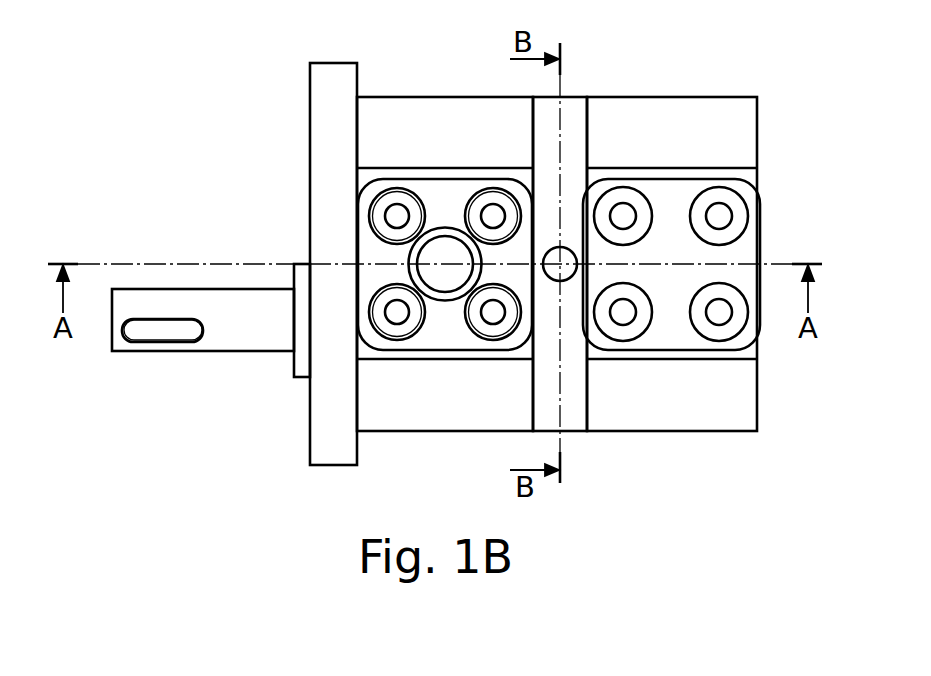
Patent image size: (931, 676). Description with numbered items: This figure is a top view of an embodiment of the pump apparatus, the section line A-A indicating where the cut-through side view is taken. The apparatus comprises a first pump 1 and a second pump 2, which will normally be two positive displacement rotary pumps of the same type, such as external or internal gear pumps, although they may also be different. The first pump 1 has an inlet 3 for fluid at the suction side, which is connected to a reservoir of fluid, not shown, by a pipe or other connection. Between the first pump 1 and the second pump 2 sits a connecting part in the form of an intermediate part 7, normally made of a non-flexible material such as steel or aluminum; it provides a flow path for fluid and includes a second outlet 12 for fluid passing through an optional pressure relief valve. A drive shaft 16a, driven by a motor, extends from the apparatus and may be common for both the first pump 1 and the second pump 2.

The first pump 1 is at (442, 425).
The second pump 2 is at (670, 425).
The inlet 3 is at (447, 247).
The intermediate part 7 is at (572, 110).
The second outlet 12 is at (562, 247).
The drive shaft 16a is at (247, 336).